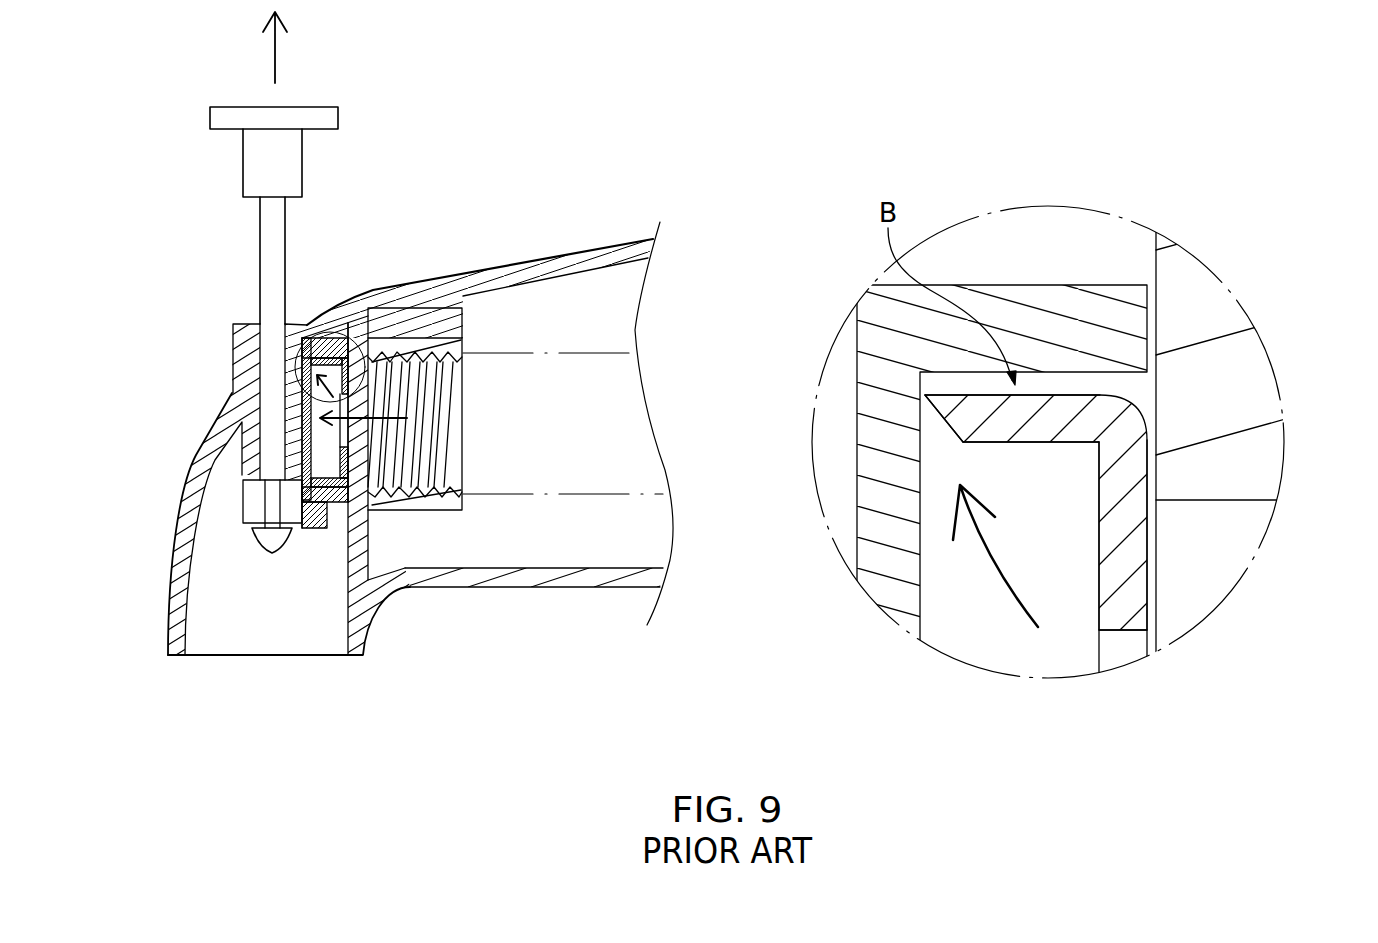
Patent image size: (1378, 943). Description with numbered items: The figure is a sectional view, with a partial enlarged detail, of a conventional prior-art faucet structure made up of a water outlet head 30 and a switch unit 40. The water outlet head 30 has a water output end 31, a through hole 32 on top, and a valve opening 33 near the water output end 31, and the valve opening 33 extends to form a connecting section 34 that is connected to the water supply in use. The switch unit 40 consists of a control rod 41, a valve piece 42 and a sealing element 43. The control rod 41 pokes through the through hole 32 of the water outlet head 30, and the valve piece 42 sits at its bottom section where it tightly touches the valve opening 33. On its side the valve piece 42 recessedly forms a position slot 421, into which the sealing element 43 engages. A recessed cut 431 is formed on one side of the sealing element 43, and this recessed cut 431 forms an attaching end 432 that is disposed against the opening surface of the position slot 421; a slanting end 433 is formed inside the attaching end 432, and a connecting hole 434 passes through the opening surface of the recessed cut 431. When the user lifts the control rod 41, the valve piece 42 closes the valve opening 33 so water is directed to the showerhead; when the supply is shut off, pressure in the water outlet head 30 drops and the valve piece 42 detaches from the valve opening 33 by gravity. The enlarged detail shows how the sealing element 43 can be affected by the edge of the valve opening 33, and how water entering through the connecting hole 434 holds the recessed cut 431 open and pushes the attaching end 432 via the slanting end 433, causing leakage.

The water outlet head 30 is at (206, 472).
The water output end 31 is at (208, 647).
The through hole 32 is at (262, 351).
The valve opening 33 is at (360, 453).
The connecting section 34 is at (440, 497).
The switch unit 40 is at (268, 516).
The control rod 41 is at (272, 260).
The valve piece 42 is at (312, 345).
The sealing element 43 is at (343, 345).
The position slot 421 is at (313, 403).
The recessed cut 431 is at (1060, 555).
The attaching end 432 is at (930, 402).
The slanting end 433 is at (958, 433).
The connecting hole 434 is at (1118, 648).